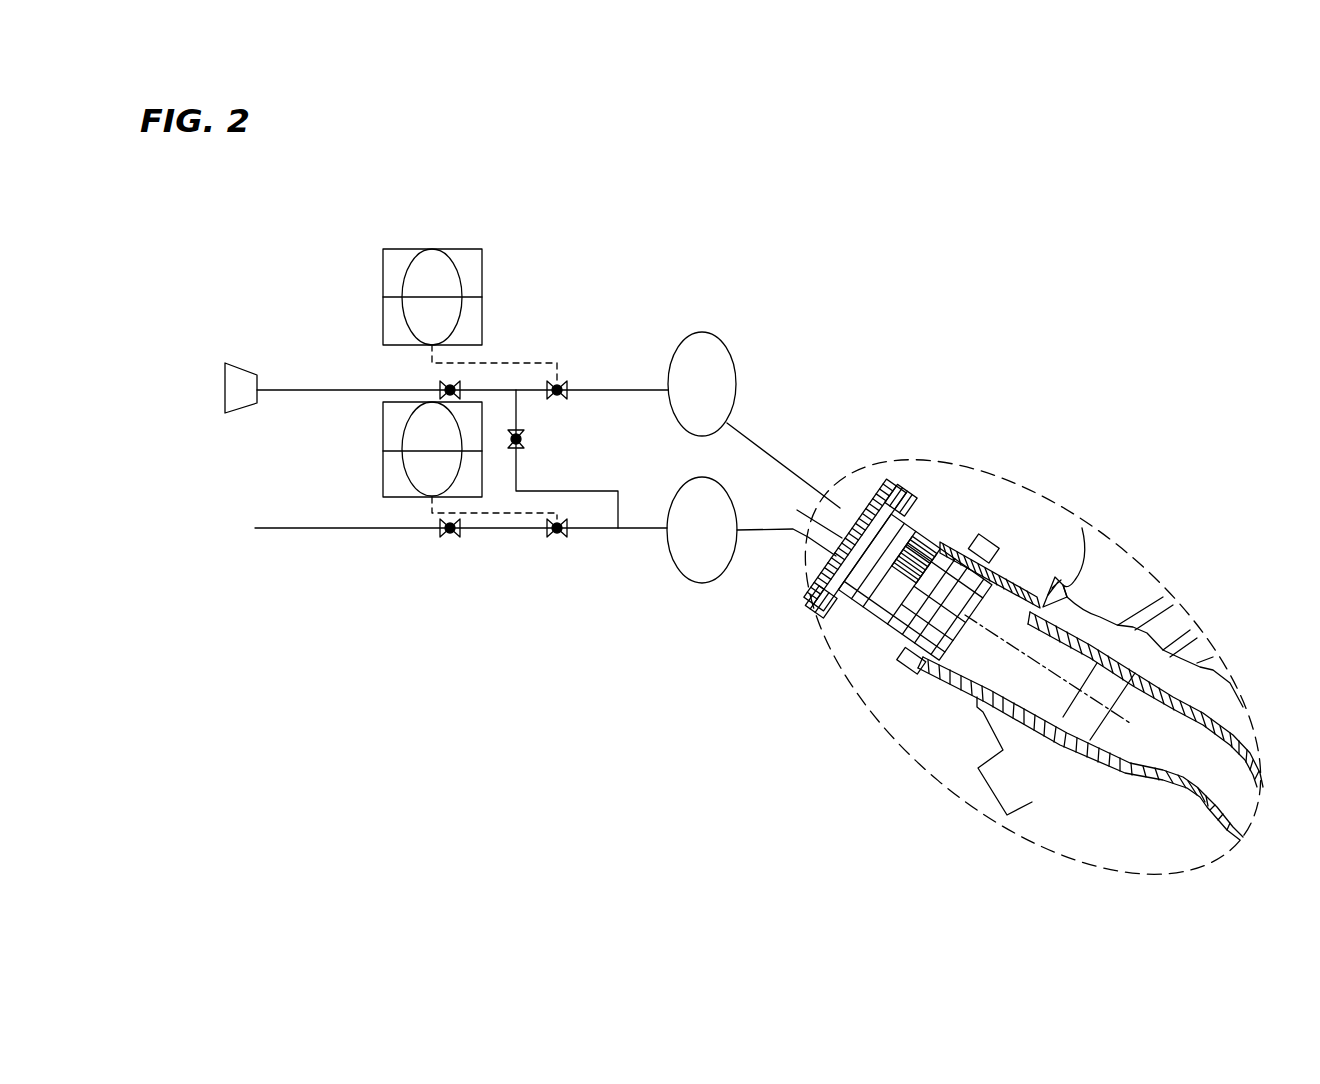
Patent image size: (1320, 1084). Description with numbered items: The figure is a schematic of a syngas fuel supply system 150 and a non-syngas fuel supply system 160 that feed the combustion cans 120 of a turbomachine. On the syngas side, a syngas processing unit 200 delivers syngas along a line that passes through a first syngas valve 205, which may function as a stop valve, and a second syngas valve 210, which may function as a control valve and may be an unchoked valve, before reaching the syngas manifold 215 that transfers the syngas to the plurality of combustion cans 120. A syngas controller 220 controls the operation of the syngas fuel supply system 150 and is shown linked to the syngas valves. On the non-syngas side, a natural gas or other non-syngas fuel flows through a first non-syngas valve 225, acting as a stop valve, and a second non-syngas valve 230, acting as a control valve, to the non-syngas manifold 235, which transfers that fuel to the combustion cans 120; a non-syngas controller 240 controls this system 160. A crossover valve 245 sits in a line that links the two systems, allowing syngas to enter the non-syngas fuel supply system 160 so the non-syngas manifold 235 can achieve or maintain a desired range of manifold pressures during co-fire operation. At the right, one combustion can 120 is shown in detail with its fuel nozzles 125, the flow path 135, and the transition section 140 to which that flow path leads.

The combustion cans 120 is at (968, 410).
The fuel nozzles 125 is at (947, 521).
The flow path 135 is at (1120, 698).
The transition section 140 is at (1160, 756).
The syngas fuel supply system 150 is at (288, 254).
The non-syngas fuel supply system 160 is at (426, 614).
The syngas processing unit 200 is at (250, 364).
The first syngas valve 205 is at (445, 383).
The second syngas valve 210 is at (560, 379).
The syngas manifold 215 is at (710, 333).
The syngas controller 220 is at (470, 249).
The first non-syngas valve 225 is at (451, 540).
The second non-syngas valve 230 is at (557, 540).
The non-syngas manifold 235 is at (700, 584).
The non-syngas controller 240 is at (383, 497).
The crossover valve 245 is at (526, 439).